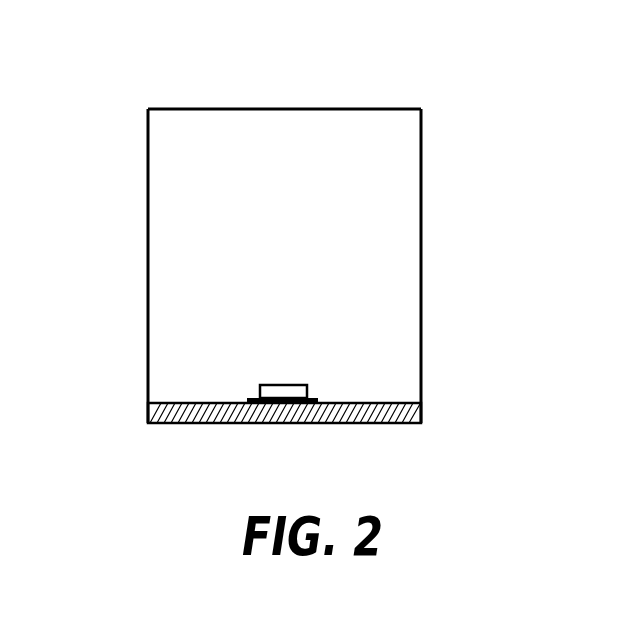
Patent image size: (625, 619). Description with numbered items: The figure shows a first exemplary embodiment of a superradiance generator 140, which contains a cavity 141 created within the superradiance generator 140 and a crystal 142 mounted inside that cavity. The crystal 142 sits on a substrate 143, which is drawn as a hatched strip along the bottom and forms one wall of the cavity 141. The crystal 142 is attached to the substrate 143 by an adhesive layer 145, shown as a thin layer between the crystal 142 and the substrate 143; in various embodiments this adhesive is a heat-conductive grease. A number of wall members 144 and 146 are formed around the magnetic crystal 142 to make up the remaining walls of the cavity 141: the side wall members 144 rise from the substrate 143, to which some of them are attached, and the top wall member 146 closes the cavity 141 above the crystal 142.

The superradiance generator 140 is at (288, 250).
The cavity 141 is at (208, 223).
The crystal 142 is at (287, 385).
The substrate 143 is at (327, 425).
The wall members 144 is at (147, 309).
The adhesive layer 145 is at (318, 400).
The wall member 146 is at (275, 108).